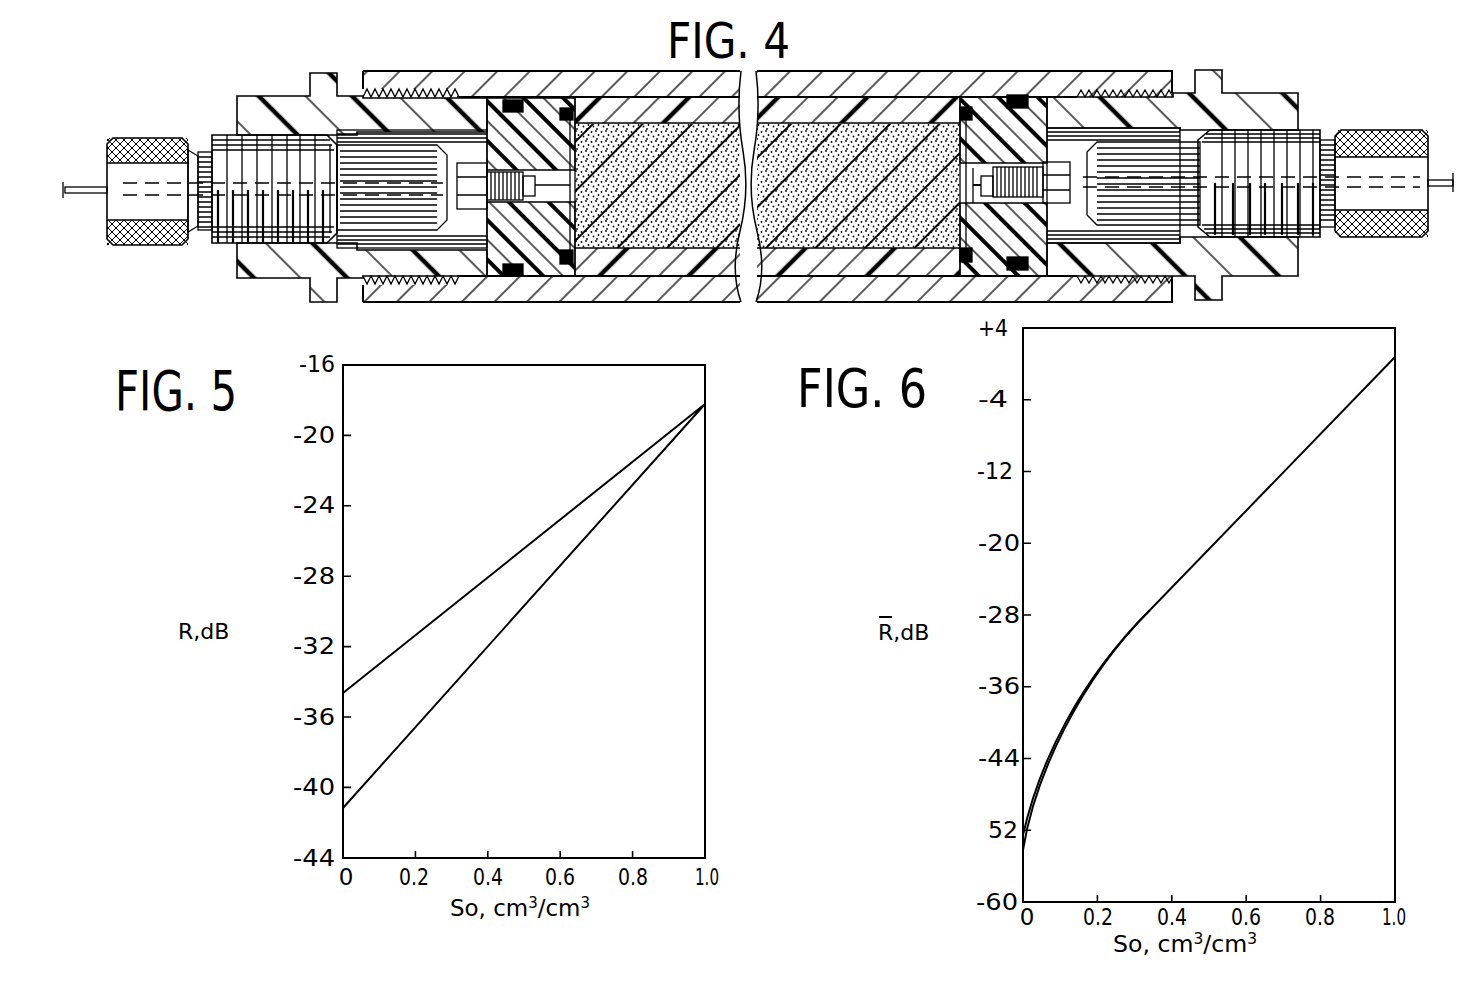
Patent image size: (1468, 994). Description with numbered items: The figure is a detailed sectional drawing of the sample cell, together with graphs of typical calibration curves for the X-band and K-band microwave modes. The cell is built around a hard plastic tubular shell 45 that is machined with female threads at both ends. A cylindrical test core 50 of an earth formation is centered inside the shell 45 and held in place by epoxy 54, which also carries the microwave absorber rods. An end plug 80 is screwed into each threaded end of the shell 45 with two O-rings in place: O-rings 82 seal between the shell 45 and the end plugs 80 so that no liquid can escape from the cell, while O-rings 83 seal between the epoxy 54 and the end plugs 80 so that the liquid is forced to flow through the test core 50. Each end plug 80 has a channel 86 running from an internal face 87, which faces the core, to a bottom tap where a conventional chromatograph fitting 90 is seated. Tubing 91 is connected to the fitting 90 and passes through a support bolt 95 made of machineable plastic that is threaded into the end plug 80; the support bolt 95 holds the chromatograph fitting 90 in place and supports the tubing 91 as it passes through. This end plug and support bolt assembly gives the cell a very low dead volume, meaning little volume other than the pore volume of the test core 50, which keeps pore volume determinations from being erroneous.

The tubular shell 45 is at (918, 70).
The test core 50 is at (715, 201).
The epoxy 54 is at (793, 253).
The end plug 80 is at (278, 98).
The O-ring 82 is at (512, 100).
The O-ring 83 is at (567, 108).
The channel 86 is at (973, 187).
The internal face 87 is at (588, 123).
The chromatograph fitting 90 is at (510, 207).
The tubing 91 is at (82, 183).
The support bolt 95 is at (160, 137).